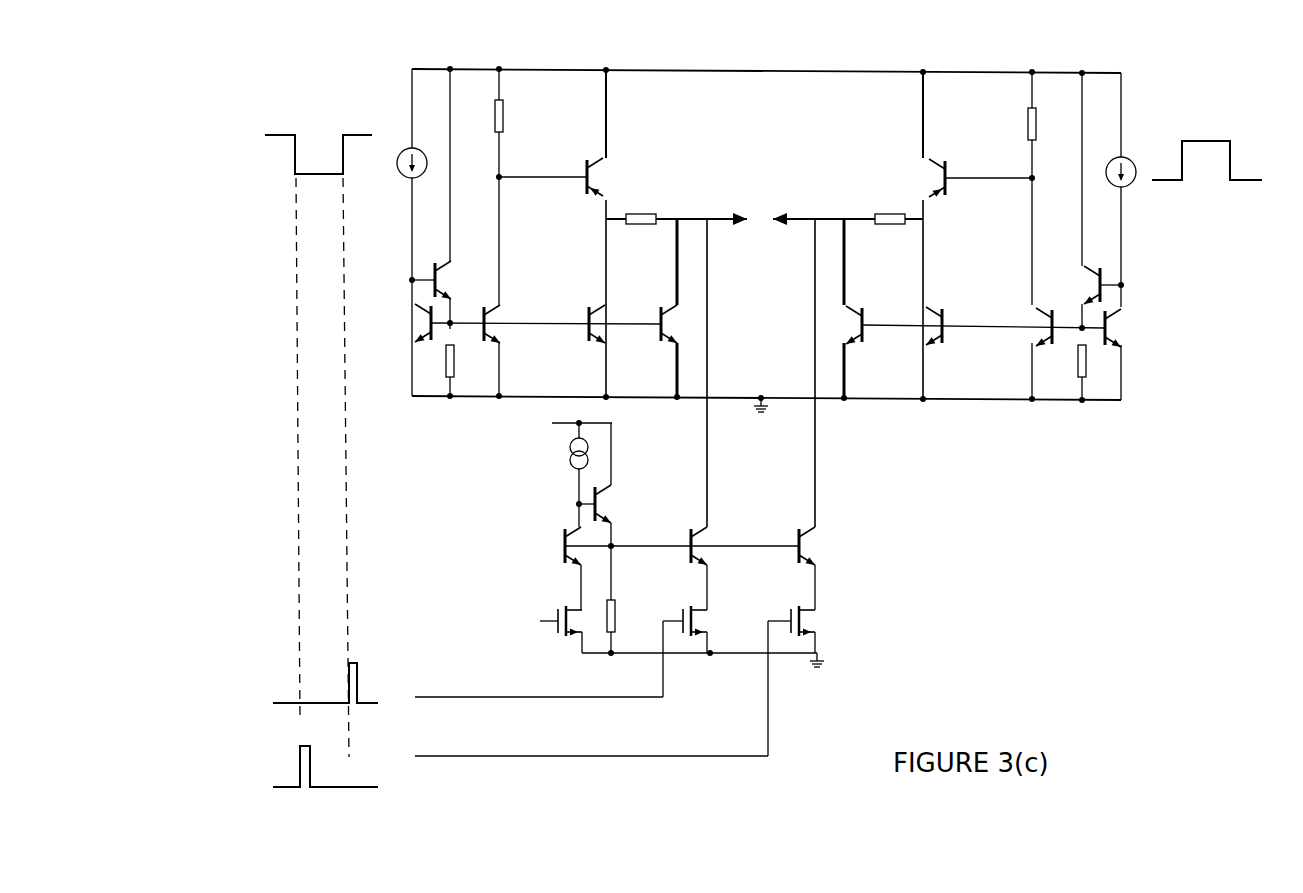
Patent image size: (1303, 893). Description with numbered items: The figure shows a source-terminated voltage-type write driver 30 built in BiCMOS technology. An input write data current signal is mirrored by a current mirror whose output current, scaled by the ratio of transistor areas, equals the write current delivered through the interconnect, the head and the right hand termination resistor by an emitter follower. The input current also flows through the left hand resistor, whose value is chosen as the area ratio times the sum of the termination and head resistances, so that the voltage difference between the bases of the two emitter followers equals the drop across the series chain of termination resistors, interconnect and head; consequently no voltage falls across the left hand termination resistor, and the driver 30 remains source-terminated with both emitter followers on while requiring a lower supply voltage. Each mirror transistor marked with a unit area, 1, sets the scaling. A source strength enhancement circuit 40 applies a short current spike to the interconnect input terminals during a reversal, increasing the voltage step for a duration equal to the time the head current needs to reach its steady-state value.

The source-terminated voltage-type write driver 30 is at (1013, 516).
The source strength enhancement circuit 40 is at (862, 593).
The unit emitter area transistor 1 is at (413, 330).